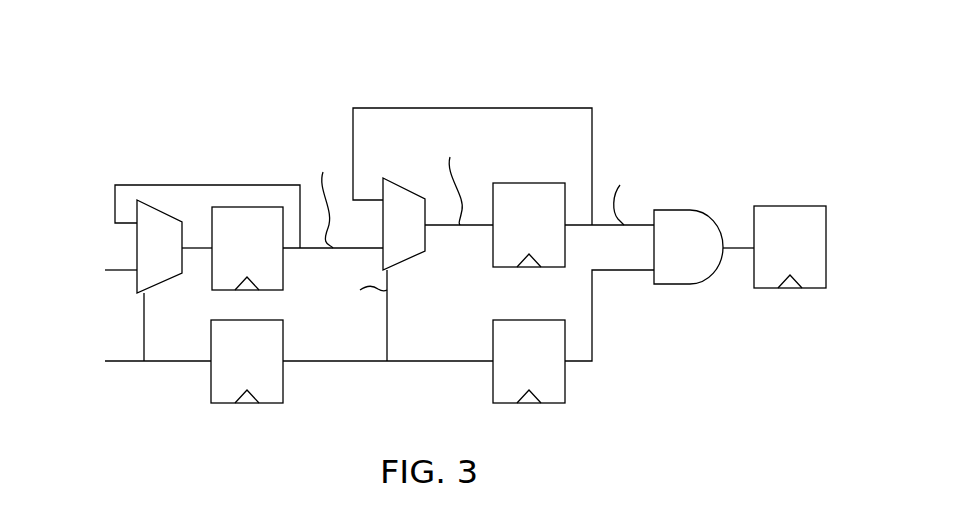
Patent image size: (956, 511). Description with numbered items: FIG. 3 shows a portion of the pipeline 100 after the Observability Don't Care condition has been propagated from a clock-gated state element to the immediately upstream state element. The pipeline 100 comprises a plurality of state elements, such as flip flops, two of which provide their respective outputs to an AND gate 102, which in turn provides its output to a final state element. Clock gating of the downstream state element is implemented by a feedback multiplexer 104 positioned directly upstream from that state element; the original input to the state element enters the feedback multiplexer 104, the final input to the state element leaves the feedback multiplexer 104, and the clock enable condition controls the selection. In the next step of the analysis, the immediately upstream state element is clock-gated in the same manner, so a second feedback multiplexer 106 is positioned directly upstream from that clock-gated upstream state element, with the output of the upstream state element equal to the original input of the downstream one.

The pipeline 100 is at (138, 125).
The AND gate 102 is at (707, 256).
The feedback multiplexer 104 is at (420, 235).
The second feedback multiplexer 106 is at (177, 258).